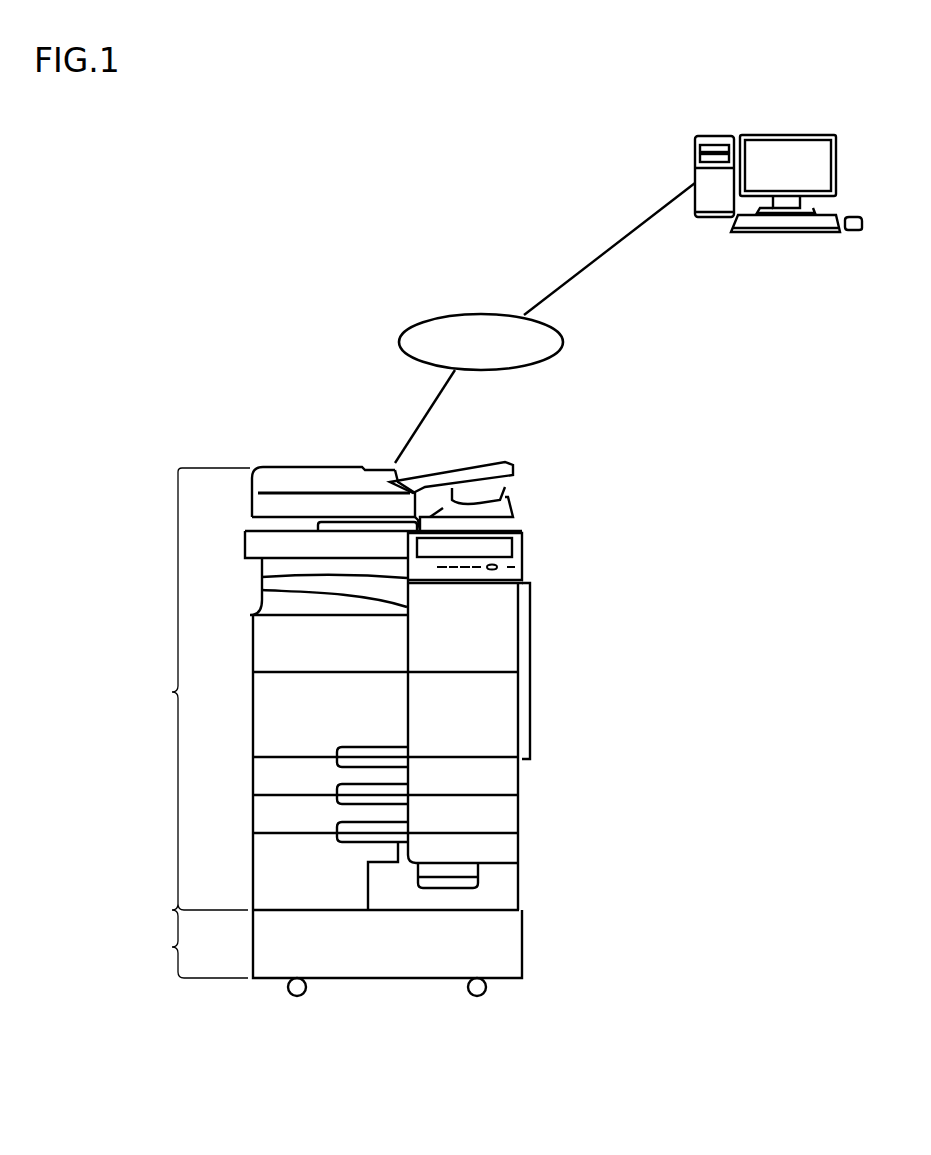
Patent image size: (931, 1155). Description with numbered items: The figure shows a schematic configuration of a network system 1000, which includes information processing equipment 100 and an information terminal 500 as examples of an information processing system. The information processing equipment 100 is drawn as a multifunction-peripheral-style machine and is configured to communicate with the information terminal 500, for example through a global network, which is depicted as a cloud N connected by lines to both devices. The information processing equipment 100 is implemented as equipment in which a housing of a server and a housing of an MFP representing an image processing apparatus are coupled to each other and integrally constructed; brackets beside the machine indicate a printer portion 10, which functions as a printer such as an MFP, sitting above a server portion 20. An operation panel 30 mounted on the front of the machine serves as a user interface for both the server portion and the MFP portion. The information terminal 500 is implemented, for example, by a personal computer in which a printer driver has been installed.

The network system 1000 is at (212, 121).
The information processing equipment 100 is at (158, 483).
The printer portion 10 is at (338, 686).
The server portion 20 is at (334, 953).
The operation panel 30 is at (518, 547).
The information terminal 500 is at (714, 134).
The network N is at (565, 342).